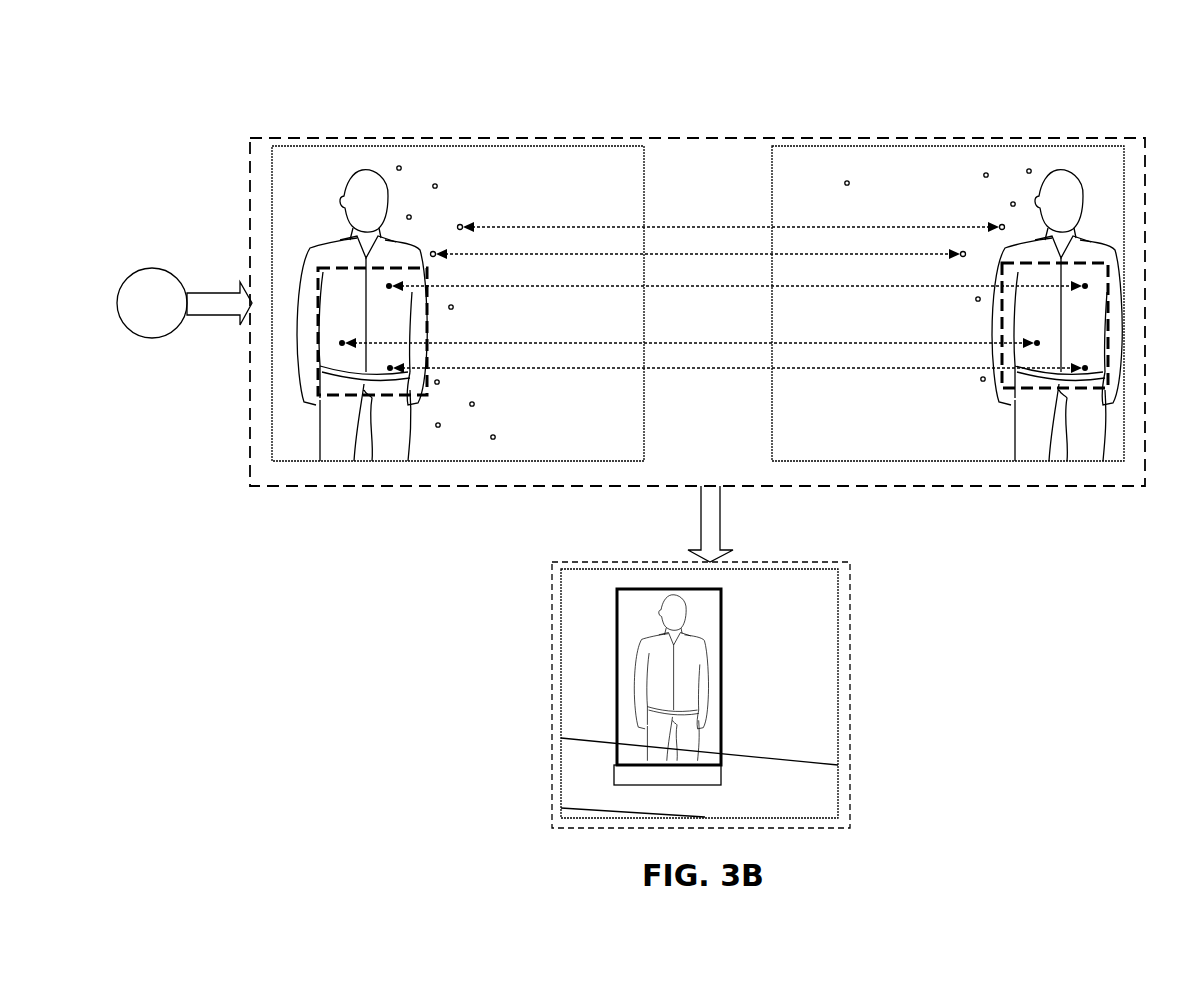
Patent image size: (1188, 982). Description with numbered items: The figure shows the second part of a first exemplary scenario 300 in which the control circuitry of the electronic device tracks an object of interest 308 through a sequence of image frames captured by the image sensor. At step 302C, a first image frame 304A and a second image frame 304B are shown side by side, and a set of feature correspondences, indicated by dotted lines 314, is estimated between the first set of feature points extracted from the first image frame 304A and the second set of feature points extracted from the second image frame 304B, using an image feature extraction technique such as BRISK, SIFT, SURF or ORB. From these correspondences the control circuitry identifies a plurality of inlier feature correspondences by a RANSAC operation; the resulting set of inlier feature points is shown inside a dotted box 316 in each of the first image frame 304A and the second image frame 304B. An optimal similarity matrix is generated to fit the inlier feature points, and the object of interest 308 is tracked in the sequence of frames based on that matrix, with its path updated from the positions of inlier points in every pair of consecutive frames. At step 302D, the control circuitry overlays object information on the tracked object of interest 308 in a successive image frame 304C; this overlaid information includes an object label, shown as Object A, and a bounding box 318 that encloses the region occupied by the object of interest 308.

The first exemplary scenario 300 is at (185, 63).
The feature correspondence estimation step 302C is at (1110, 138).
The object information overlay step 302D is at (842, 561).
The first image frame 304A is at (497, 145).
The second image frame 304B is at (915, 145).
The successive image frame 304C is at (777, 567).
The object of interest 308 is at (692, 640).
The dotted lines 314 is at (841, 365).
The dotted box 316 is at (428, 395).
The bounding box 318 is at (626, 589).